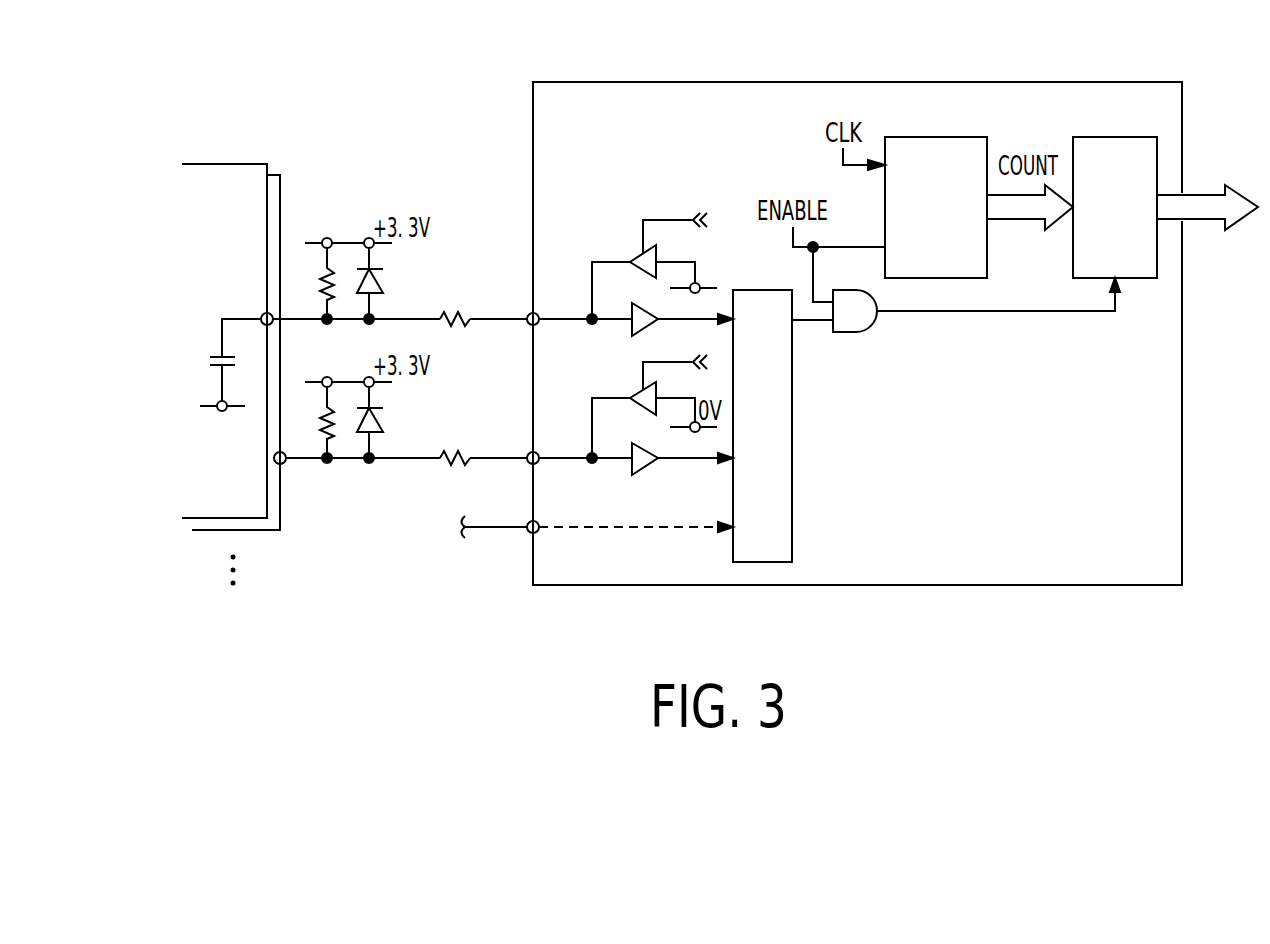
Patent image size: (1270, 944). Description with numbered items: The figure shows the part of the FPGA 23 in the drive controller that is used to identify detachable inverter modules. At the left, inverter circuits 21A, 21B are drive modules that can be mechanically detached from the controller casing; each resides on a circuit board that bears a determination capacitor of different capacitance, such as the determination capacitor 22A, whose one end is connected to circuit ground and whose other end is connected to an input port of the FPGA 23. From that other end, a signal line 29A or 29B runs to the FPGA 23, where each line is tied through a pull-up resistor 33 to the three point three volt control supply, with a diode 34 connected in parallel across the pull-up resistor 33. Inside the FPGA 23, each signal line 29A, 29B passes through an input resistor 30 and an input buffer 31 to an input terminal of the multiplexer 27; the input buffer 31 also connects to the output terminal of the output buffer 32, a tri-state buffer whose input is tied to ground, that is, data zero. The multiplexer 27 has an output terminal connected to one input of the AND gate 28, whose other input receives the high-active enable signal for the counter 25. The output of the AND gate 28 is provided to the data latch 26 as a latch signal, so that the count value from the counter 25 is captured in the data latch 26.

The inverter circuit 21A is at (223, 164).
The inverter circuit 21B is at (273, 175).
The determination capacitor 22A is at (207, 362).
The FPGA 23 is at (770, 82).
The counter 25 is at (935, 137).
The data latch 26 is at (1113, 137).
The multiplexer 27 is at (792, 497).
The AND gate 28 is at (847, 332).
The signal line 29A is at (412, 318).
The signal line 29B is at (415, 456).
The input resistor 30 is at (458, 330).
The input buffer 31 is at (628, 327).
The output buffer 32 is at (640, 257).
The pull-up resistor 33 is at (320, 275).
The diode 34 is at (384, 272).